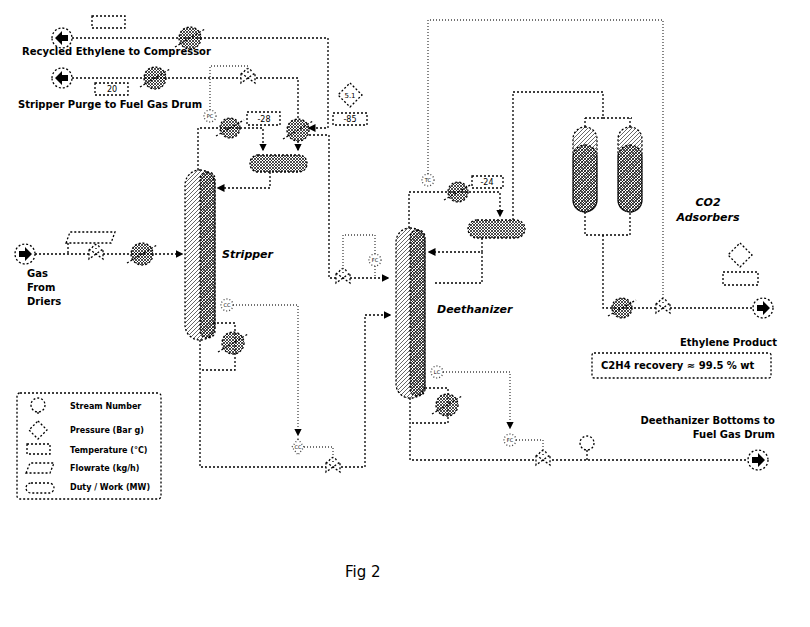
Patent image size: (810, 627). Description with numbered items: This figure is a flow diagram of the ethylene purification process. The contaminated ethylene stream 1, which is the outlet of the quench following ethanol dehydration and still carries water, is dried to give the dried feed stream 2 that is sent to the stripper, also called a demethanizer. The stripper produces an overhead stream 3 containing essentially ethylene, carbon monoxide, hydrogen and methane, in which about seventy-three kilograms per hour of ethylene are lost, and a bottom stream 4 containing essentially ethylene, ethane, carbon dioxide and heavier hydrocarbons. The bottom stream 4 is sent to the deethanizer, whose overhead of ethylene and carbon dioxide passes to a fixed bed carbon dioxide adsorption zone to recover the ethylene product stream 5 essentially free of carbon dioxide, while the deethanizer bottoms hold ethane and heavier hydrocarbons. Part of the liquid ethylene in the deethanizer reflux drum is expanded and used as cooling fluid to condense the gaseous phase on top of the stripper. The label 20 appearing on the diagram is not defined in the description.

The quench outlet stream 1 is at (50, 254).
The dried contaminated ethylene stream 2 is at (105, 78).
The stripper overhead stream 3 is at (145, 38).
The stripper bottom stream 4 is at (212, 467).
The ethylene product stream 5 is at (740, 308).
The stream temperature value 20 is at (108, 38).